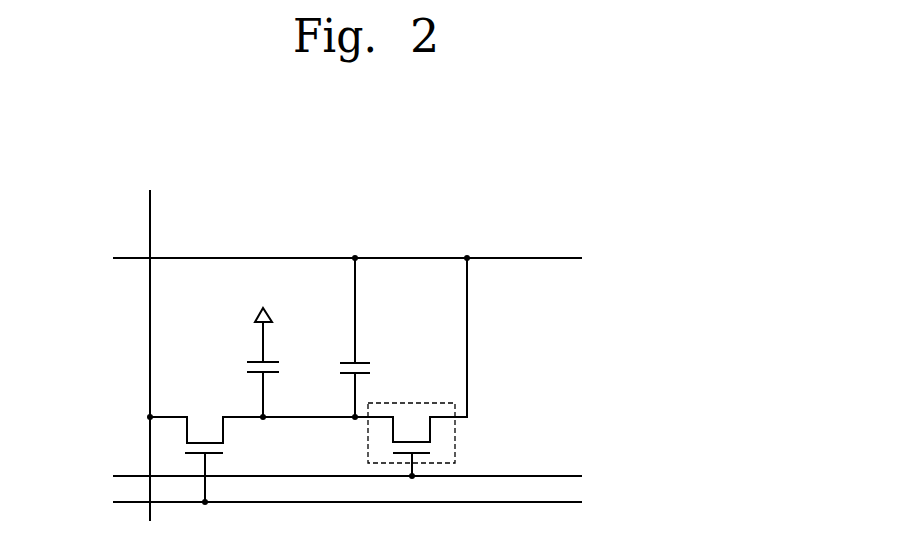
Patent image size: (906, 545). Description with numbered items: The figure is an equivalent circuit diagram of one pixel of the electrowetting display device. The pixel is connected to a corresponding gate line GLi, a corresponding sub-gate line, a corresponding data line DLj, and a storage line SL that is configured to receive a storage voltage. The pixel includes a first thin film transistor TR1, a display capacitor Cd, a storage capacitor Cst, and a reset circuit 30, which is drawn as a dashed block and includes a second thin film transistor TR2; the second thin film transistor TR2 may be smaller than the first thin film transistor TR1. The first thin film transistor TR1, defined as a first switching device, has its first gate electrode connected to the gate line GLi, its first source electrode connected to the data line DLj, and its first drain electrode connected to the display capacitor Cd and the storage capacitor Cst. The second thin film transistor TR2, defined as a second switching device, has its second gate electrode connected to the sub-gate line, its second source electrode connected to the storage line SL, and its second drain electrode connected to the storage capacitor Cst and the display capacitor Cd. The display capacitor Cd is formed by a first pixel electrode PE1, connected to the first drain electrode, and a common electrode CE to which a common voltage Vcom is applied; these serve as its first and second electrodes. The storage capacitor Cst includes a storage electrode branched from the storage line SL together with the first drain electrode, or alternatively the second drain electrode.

The reset circuit 30 is at (455, 428).
The first thin film transistor TR1 is at (230, 447).
The second thin film transistor TR2 is at (438, 445).
The storage capacitor Cst is at (374, 337).
The display capacitor Cd is at (83, 323).
The common electrode CE is at (252, 359).
The first pixel electrode PE1 is at (252, 376).
The common voltage Vcom is at (262, 323).
The data line DLj is at (141, 340).
The storage line SL is at (334, 262).
The gate line GLi is at (327, 505).